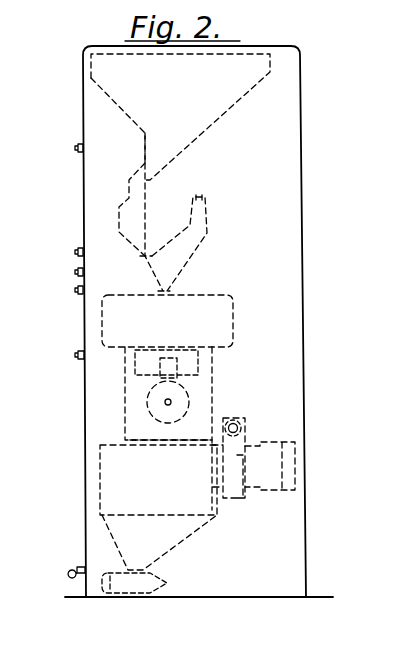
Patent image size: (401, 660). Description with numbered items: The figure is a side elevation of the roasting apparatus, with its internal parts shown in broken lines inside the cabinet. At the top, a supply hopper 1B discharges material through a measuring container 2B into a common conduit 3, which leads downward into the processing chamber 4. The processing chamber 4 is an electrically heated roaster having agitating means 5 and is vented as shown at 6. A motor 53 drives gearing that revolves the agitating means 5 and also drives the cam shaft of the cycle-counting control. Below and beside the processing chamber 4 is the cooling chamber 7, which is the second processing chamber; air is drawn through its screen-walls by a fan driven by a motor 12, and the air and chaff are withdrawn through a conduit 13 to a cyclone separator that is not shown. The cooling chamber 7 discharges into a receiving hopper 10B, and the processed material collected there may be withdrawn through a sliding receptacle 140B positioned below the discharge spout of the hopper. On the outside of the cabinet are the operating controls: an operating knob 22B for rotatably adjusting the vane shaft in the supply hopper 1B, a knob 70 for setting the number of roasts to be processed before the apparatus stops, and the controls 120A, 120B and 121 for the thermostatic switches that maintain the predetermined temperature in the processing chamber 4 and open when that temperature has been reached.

The supply hopper 1B is at (198, 103).
The measuring container 2B is at (127, 213).
The common conduit 3 is at (160, 266).
The processing chamber 4 is at (220, 315).
The agitating means 5 is at (110, 160).
The vent 6 is at (186, 247).
The cooling chamber 7 is at (208, 420).
The receiving hopper 10B is at (122, 495).
The motor 12 is at (270, 463).
The conduit 13 is at (236, 420).
The operating knob 22B is at (77, 148).
The motor 53 is at (183, 400).
The knob 70 is at (77, 356).
The thermostatic switch control 120A is at (77, 253).
The thermostatic switch control 120B is at (77, 273).
The thermostatic switch control 121 is at (77, 292).
The sliding receptacle 140B is at (135, 582).